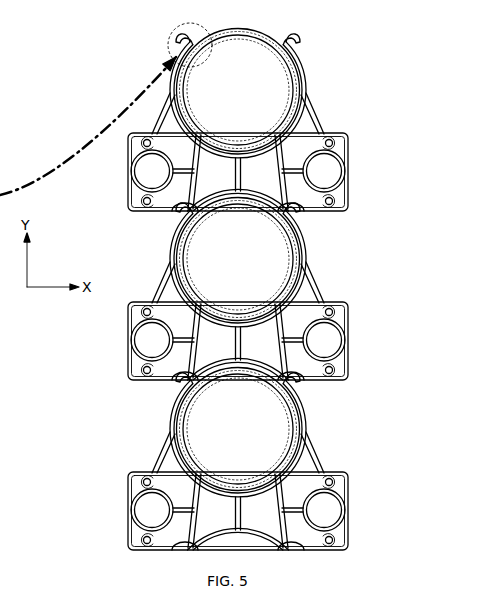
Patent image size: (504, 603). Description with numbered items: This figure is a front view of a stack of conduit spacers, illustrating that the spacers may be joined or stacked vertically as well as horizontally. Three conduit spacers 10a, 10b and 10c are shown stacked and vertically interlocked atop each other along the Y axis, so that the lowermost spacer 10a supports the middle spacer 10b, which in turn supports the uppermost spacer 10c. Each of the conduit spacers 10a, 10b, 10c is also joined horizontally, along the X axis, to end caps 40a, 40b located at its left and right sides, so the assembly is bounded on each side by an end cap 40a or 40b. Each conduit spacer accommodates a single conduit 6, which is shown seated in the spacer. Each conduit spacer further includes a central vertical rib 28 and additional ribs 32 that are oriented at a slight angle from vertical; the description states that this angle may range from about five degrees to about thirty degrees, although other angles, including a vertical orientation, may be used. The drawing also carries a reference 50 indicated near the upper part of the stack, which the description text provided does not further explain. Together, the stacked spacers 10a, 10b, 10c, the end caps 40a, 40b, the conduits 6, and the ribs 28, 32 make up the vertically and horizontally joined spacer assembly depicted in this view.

The conduit 6 is at (292, 76).
The conduit spacer 10a is at (239, 461).
The conduit spacer 10b is at (239, 291).
The conduit spacer 10c is at (310, 100).
The central vertical rib 28 is at (253, 512).
The additional ribs 32 is at (238, 511).
The end cap 40a is at (128, 181).
The end cap 40b is at (348, 181).
The stacking direction 50 is at (372, 86).